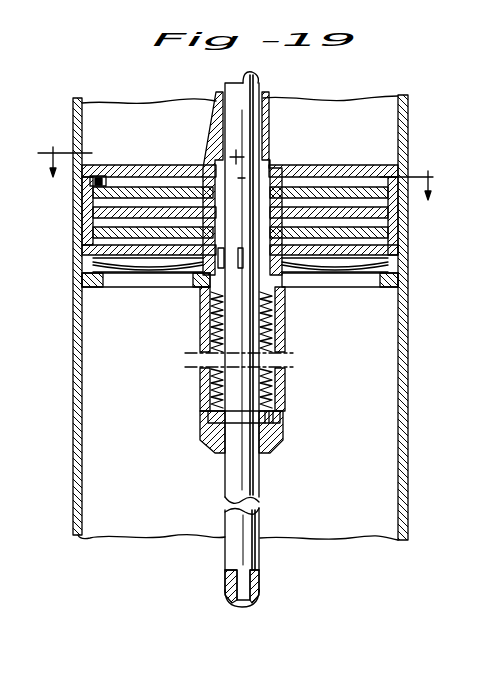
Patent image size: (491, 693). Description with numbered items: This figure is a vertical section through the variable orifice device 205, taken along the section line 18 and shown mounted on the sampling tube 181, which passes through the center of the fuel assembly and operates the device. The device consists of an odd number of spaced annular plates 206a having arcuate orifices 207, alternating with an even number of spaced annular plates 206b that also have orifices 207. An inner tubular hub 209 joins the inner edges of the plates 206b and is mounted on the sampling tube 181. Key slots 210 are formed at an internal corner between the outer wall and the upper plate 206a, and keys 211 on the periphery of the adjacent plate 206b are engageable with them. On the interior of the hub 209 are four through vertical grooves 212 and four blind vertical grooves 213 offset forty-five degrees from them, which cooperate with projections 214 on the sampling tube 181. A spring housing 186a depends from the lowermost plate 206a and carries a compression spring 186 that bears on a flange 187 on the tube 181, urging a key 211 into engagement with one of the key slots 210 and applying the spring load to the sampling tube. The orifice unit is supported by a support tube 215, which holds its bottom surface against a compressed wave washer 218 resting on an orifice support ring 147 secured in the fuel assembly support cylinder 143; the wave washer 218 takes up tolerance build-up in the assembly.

The section line 18— 18 is at (241, 185).
The fuel assembly support cylinder 143 is at (408, 358).
The orifice support ring 147 is at (392, 278).
The sampling tube 181 is at (235, 481).
The compression spring 186 is at (270, 311).
The spring housing 186a is at (268, 338).
The flange 187 is at (278, 416).
The variable orifice device 205 is at (378, 167).
The spaced annular plates 206a is at (172, 235).
The spaced annular plates 206b is at (140, 215).
The arcuate orifices 207 is at (327, 190).
The inner tubular hub 209 is at (283, 195).
The key slots 210 is at (107, 178).
The keys 211 is at (121, 178).
The through vertical grooves 212 is at (221, 270).
The blind vertical grooves 213 is at (275, 195).
The projections 214 is at (205, 320).
The support tube 215 is at (216, 116).
The wave washer 218 is at (382, 264).